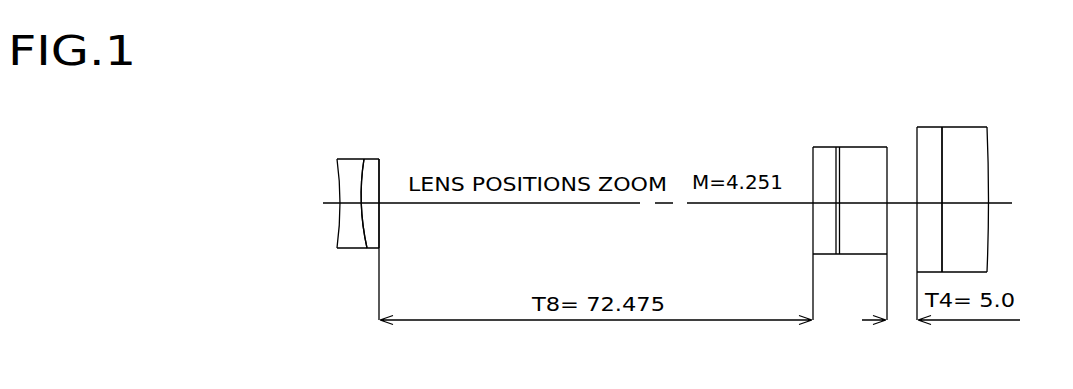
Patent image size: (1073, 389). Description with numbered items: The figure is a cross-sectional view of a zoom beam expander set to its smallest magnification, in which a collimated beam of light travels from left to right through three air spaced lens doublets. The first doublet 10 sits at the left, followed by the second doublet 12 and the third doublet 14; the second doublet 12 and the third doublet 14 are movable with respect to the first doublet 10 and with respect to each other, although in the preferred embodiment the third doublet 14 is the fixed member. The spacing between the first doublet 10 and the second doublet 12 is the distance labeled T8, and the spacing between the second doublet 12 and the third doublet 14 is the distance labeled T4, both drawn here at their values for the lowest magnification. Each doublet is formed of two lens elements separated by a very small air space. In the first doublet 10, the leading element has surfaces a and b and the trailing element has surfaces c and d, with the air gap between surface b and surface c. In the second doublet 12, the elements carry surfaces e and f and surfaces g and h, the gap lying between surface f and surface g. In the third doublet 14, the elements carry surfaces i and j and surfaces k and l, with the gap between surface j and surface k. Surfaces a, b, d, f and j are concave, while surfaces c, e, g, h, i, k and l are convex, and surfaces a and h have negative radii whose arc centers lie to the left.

The first doublet 10 is at (354, 208).
The second doublet 12 is at (820, 182).
The third doublet 14 is at (969, 180).
The surface a is at (305, 194).
The surface b is at (345, 172).
The surface c is at (397, 184).
The surface d is at (408, 195).
The surface e is at (777, 208).
The surface f is at (820, 166).
The surface g is at (859, 170).
The surface h is at (885, 182).
The surface i is at (914, 180).
The surface j is at (933, 172).
The surface k is at (964, 171).
The surface l is at (1008, 197).